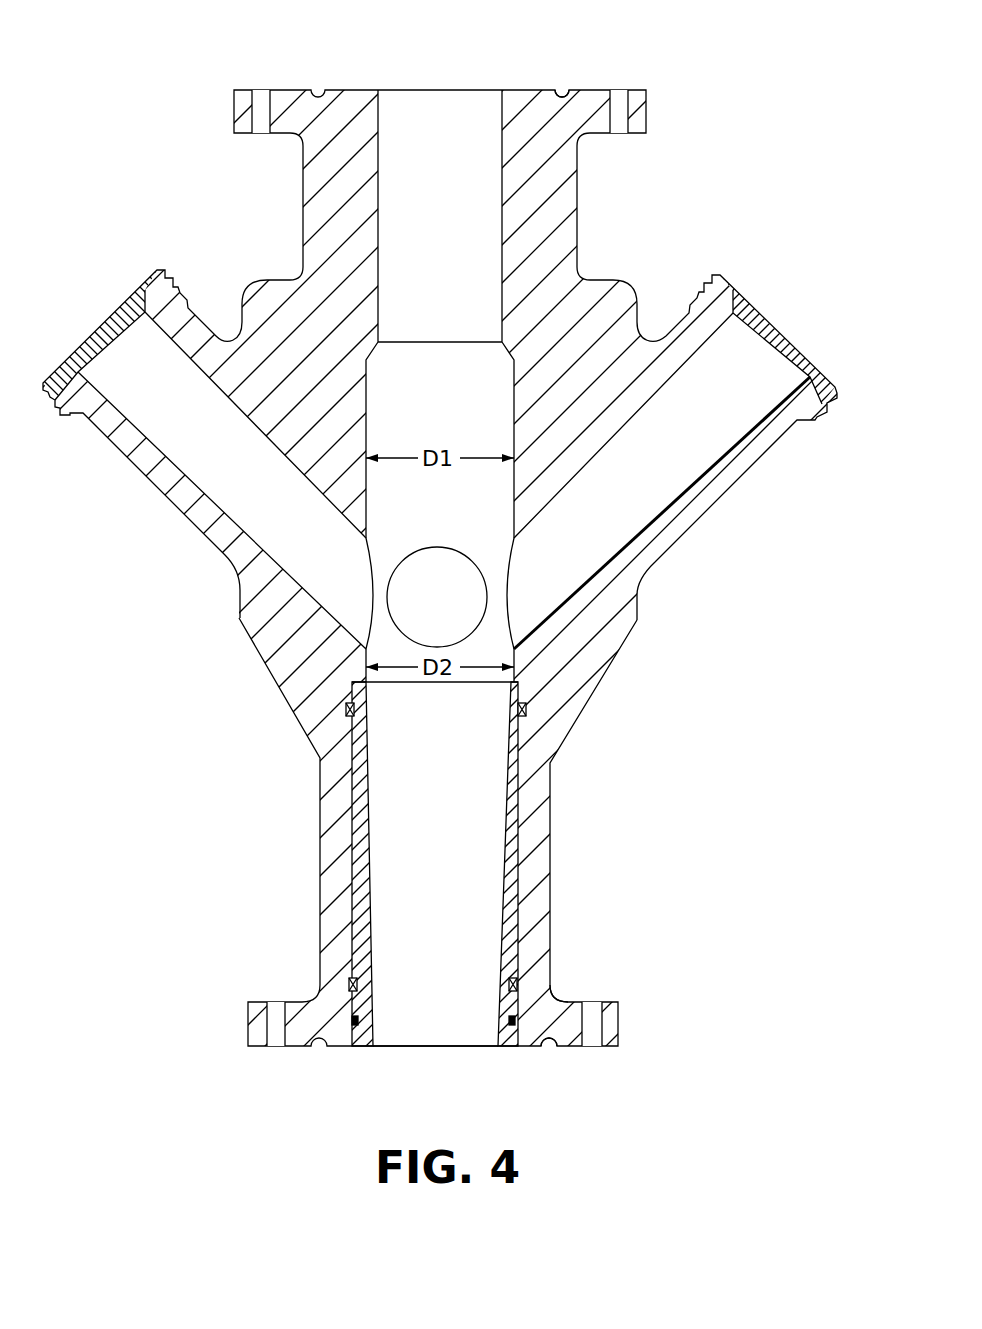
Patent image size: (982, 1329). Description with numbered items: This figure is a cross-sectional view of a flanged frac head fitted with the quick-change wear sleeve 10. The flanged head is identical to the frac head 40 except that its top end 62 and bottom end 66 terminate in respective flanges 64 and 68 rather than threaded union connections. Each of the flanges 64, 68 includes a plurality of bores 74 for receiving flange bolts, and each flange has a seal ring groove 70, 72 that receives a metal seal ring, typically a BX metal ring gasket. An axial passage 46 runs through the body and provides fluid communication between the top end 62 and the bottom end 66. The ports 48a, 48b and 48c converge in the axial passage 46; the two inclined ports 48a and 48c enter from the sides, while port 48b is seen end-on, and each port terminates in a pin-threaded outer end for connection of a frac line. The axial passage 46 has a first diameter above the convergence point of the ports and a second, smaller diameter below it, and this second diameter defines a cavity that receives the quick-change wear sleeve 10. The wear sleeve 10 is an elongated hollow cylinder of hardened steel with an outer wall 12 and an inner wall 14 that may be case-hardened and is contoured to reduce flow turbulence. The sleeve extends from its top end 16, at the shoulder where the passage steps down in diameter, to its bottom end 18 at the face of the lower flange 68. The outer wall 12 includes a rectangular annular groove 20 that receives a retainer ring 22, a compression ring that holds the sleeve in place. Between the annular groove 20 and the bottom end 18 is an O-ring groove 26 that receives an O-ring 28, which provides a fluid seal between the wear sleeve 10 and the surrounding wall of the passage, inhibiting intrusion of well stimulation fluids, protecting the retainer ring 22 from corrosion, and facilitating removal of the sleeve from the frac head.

The quick-change wear sleeve 10 is at (455, 886).
The outer wall 12 is at (518, 812).
The inner wall 14 is at (502, 822).
The top end 16 is at (458, 683).
The bottom end 18 is at (413, 1047).
The rectangular annular groove 20 is at (507, 983).
The retainer ring 22 is at (359, 982).
The O-ring groove 26 is at (507, 1018).
The O-ring 28 is at (360, 1019).
The frac head 40 is at (666, 630).
The axial passage 46 is at (453, 276).
The port 48a is at (178, 440).
The port 48b is at (432, 567).
The port 48c is at (677, 450).
The top end 62 is at (522, 91).
The flange 64 is at (600, 140).
The bottom end 66 is at (523, 1047).
The flange 68 is at (552, 998).
The seal ring groove 70 is at (566, 93).
The seal ring groove 72 is at (549, 1051).
The bores 74 is at (620, 102).